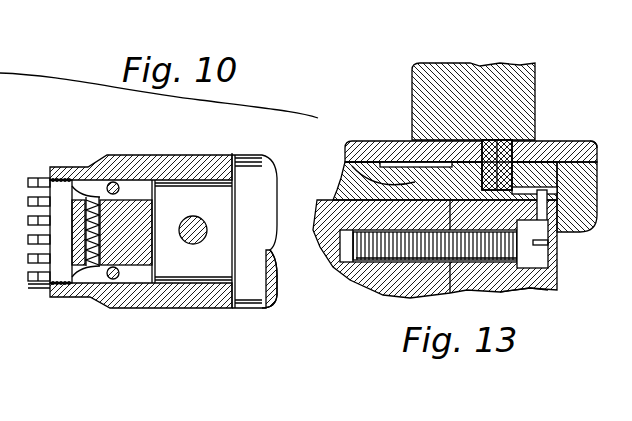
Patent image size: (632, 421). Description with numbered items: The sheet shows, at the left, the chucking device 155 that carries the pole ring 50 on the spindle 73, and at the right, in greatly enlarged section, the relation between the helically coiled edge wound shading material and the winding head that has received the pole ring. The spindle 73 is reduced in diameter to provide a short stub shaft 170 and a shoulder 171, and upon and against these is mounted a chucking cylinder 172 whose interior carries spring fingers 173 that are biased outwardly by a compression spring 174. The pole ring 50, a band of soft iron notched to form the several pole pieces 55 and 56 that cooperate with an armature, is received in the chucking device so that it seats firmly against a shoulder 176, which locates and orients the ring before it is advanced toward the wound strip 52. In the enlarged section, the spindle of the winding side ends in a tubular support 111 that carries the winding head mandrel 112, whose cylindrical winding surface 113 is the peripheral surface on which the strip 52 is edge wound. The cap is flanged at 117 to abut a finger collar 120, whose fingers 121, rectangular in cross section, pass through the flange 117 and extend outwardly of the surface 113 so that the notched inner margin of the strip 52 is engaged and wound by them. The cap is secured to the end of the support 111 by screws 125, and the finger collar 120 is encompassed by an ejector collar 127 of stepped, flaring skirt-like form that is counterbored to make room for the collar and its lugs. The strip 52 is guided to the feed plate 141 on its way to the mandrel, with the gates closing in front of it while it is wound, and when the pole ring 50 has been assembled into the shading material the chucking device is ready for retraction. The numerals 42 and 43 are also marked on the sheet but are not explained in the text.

In FIG. 10, the circuit board 42 is at (11, 98).
In FIG. 10, the connector body 43 is at (9, 379).
In FIG. 10, the pole ring 50 is at (40, 289).
In FIG. 13, the pole ring 50 is at (555, 158).
In FIG. 13, the strip 52 is at (513, 140).
In FIG. 10, the pole pieces 55 is at (28, 206).
In FIG. 10, the pole pieces 56 is at (50, 221).
In FIG. 10, the spindle 73 is at (258, 168).
In FIG. 13, the tubular support 111 is at (388, 293).
In FIG. 13, the winding head mandrel 112 is at (543, 286).
In FIG. 13, the cylindrical winding surface 113 is at (537, 243).
In FIG. 13, the flange 117 is at (462, 178).
In FIG. 13, the finger collar 120 is at (355, 184).
In FIG. 13, the fingers 121 is at (382, 165).
In FIG. 13, the screws 125 is at (356, 272).
In FIG. 13, the ejector collar 127 is at (397, 142).
In FIG. 13, the feed plate 141 is at (518, 107).
In FIG. 10, the chucking device 155 is at (63, 160).
In FIG. 13, the chucking device 155 is at (592, 194).
In FIG. 10, the stub shaft 170 is at (186, 190).
In FIG. 10, the shoulder 171 is at (230, 165).
In FIG. 10, the chucking cylinder 172 is at (152, 165).
In FIG. 10, the spring fingers 173 is at (93, 180).
In FIG. 10, the compression spring 174 is at (113, 250).
In FIG. 10, the shoulder 176 is at (52, 167).
In FIG. 13, the shoulder 176 is at (600, 141).